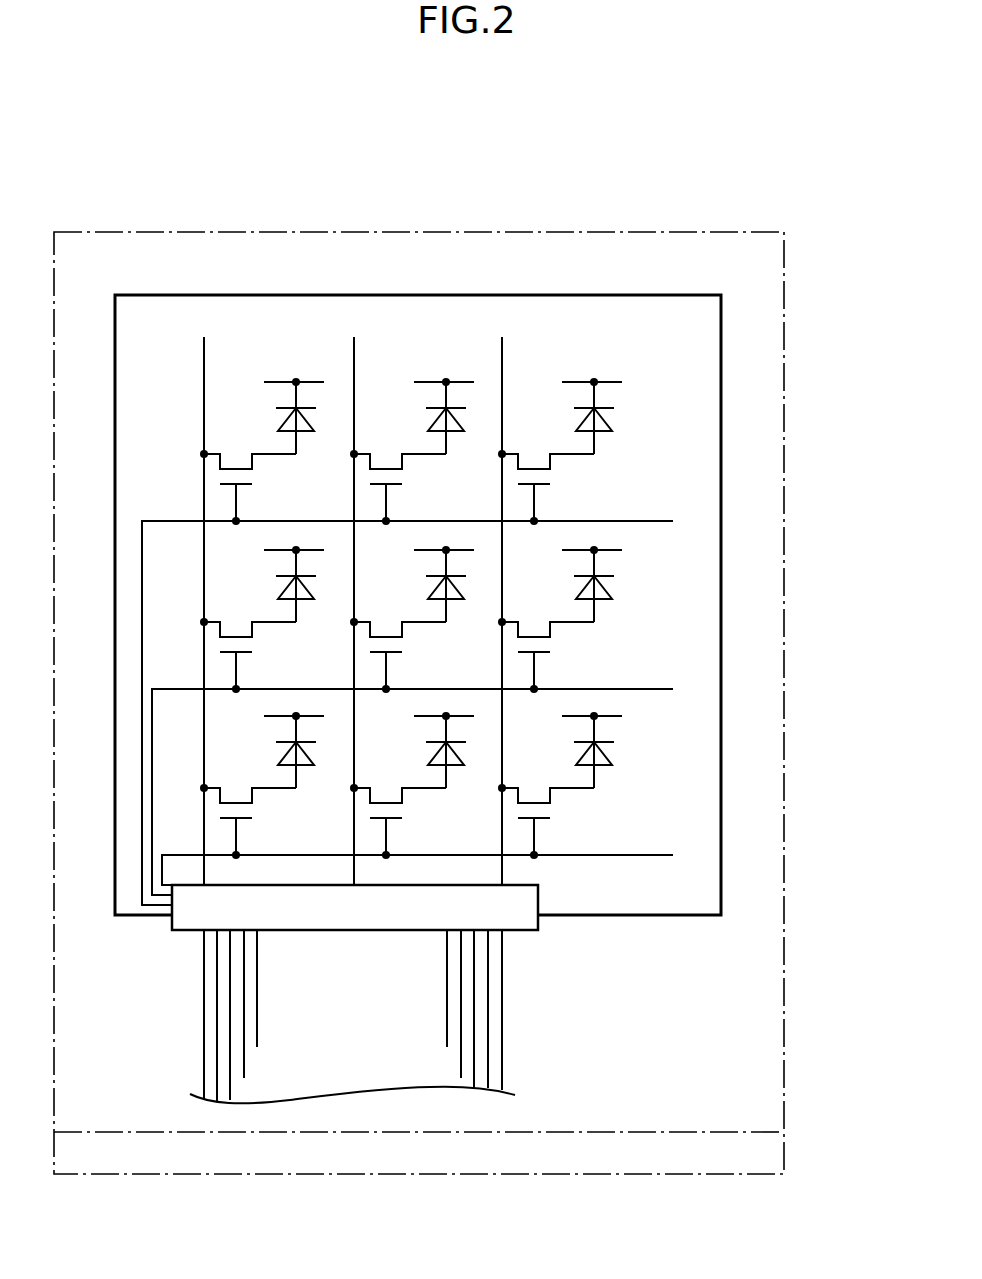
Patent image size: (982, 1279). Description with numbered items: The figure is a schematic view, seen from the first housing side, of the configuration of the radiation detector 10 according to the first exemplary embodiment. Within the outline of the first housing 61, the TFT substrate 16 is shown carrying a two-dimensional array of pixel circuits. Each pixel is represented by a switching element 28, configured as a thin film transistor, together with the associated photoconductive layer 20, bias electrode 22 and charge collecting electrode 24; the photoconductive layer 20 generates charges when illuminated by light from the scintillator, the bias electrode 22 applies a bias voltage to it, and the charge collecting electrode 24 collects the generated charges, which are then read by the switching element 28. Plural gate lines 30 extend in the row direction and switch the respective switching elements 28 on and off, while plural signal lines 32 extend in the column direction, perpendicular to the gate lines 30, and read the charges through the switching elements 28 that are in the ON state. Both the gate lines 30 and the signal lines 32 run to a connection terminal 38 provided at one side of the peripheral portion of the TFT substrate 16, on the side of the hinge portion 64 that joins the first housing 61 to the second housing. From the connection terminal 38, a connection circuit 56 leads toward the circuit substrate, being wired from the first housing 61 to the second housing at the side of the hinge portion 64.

The radiation detector 10 is at (742, 173).
The TFT substrate 16 is at (558, 285).
The photoconductive layer 20 is at (447, 615).
The bias electrode 22 is at (447, 615).
The charge collecting electrode 24 is at (610, 776).
The switching element 28 is at (536, 776).
The gate line 30 is at (680, 890).
The signal line 32 is at (504, 358).
The connection terminal 38 is at (520, 924).
The connection circuit 56 is at (495, 1038).
The first housing 61 is at (785, 303).
The hinge portion 64 is at (772, 1152).